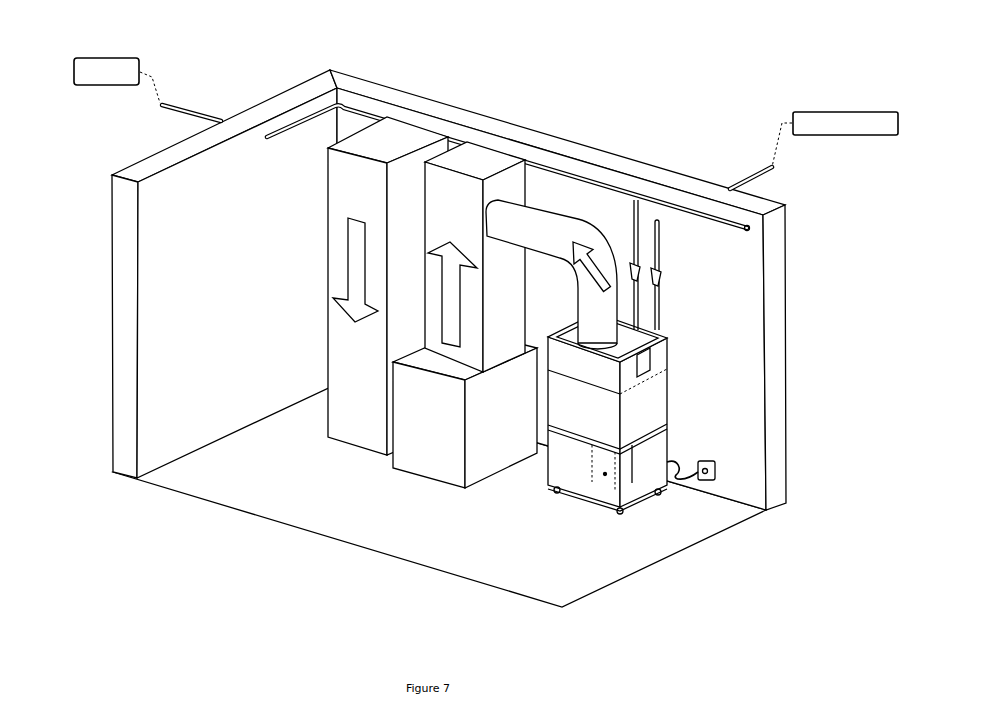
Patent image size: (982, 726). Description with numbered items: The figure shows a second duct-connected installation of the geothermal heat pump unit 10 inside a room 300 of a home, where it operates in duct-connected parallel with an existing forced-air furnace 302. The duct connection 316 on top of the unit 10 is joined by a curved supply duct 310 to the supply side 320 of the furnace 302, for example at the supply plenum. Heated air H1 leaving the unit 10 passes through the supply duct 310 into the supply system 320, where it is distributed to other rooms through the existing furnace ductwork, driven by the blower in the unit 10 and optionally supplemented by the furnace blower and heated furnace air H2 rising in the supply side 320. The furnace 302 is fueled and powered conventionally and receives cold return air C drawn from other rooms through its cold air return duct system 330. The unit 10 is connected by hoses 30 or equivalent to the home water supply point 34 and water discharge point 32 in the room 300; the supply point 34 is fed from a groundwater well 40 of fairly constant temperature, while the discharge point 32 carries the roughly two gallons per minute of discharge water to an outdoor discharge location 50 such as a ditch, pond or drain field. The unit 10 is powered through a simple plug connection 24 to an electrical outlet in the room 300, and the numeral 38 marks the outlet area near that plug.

The geothermal heat pump unit 10 is at (513, 447).
The plug connection 24 is at (690, 478).
The hoses 30 is at (650, 246).
The home water discharge point 32 is at (657, 272).
The home water supply point 34 is at (637, 266).
The power plug 38 is at (716, 468).
The groundwater well 40 is at (147, 77).
The outdoor discharge location 50 is at (845, 110).
The room 300 is at (474, 338).
The furnace 302 is at (427, 437).
The supply duct 310 is at (551, 223).
The duct connection 316 is at (628, 342).
The supply side 320 is at (377, 222).
The cold air return duct system 330 is at (356, 244).
The cold air C is at (345, 262).
The heated air H1 is at (575, 268).
The heated furnace air H2 is at (440, 300).